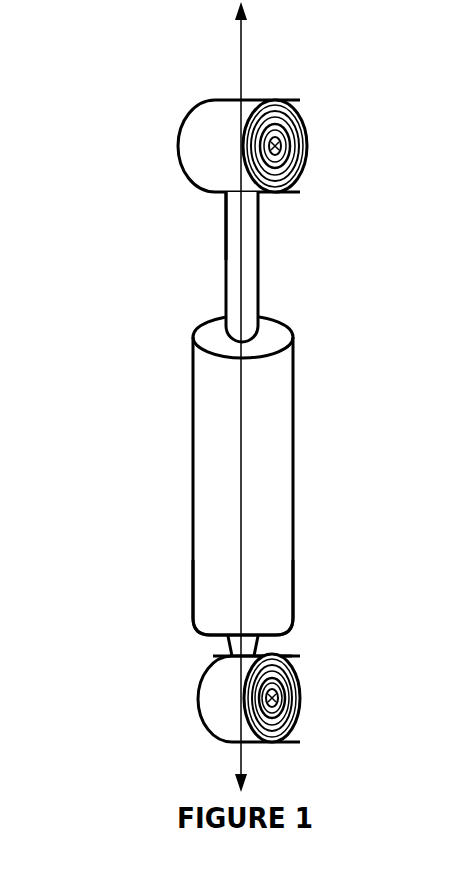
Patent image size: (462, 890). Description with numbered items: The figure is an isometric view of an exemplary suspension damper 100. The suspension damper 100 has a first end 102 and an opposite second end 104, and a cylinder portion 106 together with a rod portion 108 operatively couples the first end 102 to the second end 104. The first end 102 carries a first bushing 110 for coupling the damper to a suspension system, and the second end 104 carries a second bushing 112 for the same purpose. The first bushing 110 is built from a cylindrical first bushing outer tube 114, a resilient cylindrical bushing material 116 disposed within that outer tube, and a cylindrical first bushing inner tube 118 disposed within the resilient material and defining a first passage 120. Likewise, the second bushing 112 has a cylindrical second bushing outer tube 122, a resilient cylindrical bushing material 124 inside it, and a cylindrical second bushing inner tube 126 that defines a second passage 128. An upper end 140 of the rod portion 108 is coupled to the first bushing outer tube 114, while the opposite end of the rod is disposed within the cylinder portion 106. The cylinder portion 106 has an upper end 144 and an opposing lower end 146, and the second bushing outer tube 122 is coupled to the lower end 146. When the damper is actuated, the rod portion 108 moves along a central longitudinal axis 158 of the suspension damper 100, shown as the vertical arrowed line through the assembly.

The suspension damper 100 is at (70, 105).
The first end 102 is at (210, 100).
The second end 104 is at (198, 695).
The cylinder portion 106 is at (294, 425).
The rod portion 108 is at (260, 293).
The first bushing 110 is at (155, 135).
The second bushing 112 is at (168, 723).
The first bushing outer tube 114 is at (305, 106).
The resilient cylindrical bushing material 116 is at (305, 135).
The first bushing inner tube 118 is at (290, 180).
The first passage 120 is at (303, 163).
The second bushing outer tube 122 is at (295, 730).
The resilient cylindrical bushing material 124 is at (299, 692).
The second bushing inner tube 126 is at (278, 672).
The second passage 128 is at (274, 690).
The upper end of the rod portion 140 is at (225, 222).
The upper end of the cylinder portion 144 is at (193, 372).
The lower end of the cylinder portion 146 is at (193, 600).
The central longitudinal axis 158 is at (241, 52).